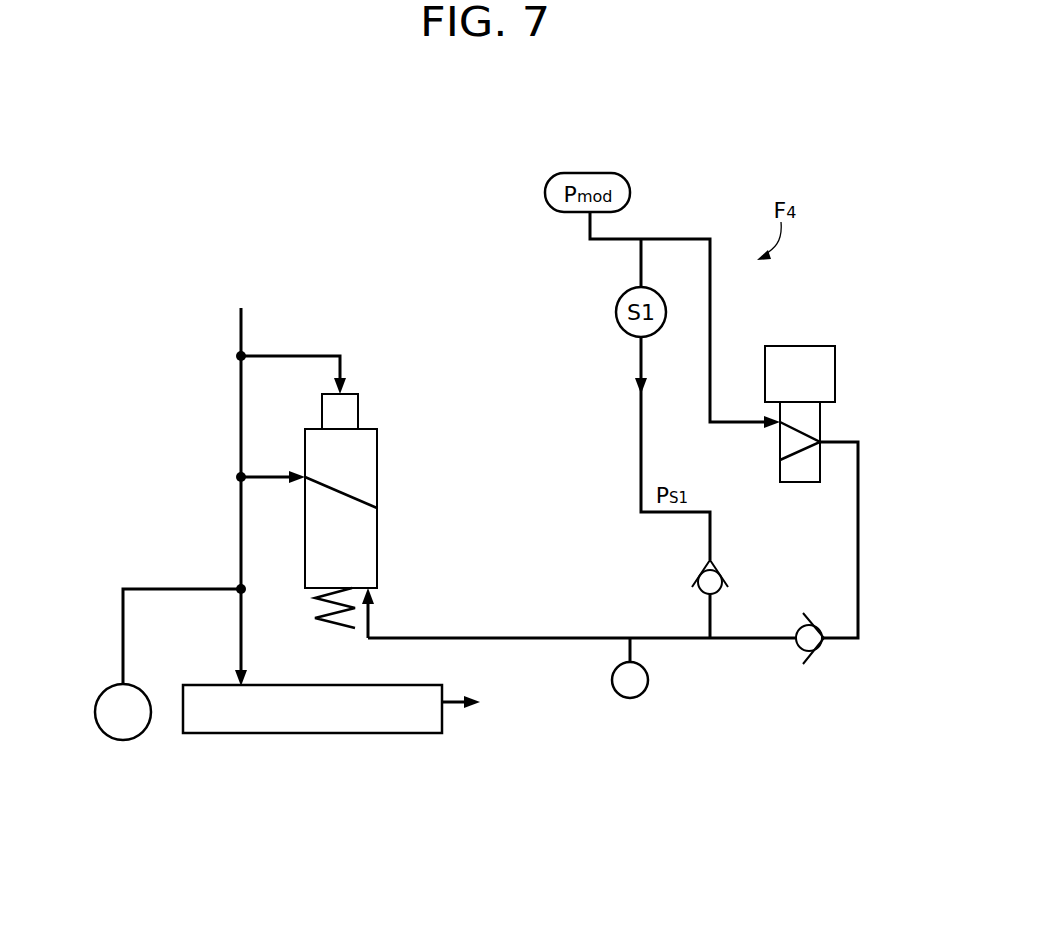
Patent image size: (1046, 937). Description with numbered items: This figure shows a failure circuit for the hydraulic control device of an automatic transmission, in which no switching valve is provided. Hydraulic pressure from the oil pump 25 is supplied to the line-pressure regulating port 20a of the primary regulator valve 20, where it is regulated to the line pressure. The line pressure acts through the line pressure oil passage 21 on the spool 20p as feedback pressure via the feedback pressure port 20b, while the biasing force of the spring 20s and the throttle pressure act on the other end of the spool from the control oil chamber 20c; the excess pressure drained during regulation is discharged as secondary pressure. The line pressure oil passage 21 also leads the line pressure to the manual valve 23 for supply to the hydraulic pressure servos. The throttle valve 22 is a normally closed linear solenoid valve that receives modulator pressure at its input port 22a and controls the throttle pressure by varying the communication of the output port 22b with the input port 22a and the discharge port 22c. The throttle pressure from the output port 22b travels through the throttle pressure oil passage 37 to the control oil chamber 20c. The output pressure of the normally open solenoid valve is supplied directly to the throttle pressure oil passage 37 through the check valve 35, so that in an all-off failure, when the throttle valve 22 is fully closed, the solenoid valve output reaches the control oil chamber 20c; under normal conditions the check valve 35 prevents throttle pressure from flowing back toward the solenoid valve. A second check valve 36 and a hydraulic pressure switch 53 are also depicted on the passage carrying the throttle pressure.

The primary regulator valve 20 is at (405, 362).
The line-pressure regulating port 20a is at (305, 473).
The feedback pressure port 20b is at (353, 389).
The control oil chamber 20c is at (373, 597).
The spool 20p is at (359, 417).
The spring 20s is at (330, 623).
The line pressure oil passage 21 is at (241, 330).
The throttle valve 22 is at (853, 349).
The input port 22a is at (770, 421).
The output port 22b is at (822, 442).
The discharge port 22c is at (781, 462).
The manual valve 23 is at (290, 734).
The oil pump 25 is at (117, 683).
The check valve 35 is at (698, 589).
The check valve 36 is at (797, 645).
The throttle pressure oil passage 37 is at (573, 636).
The hydraulic pressure switch 53 is at (649, 677).